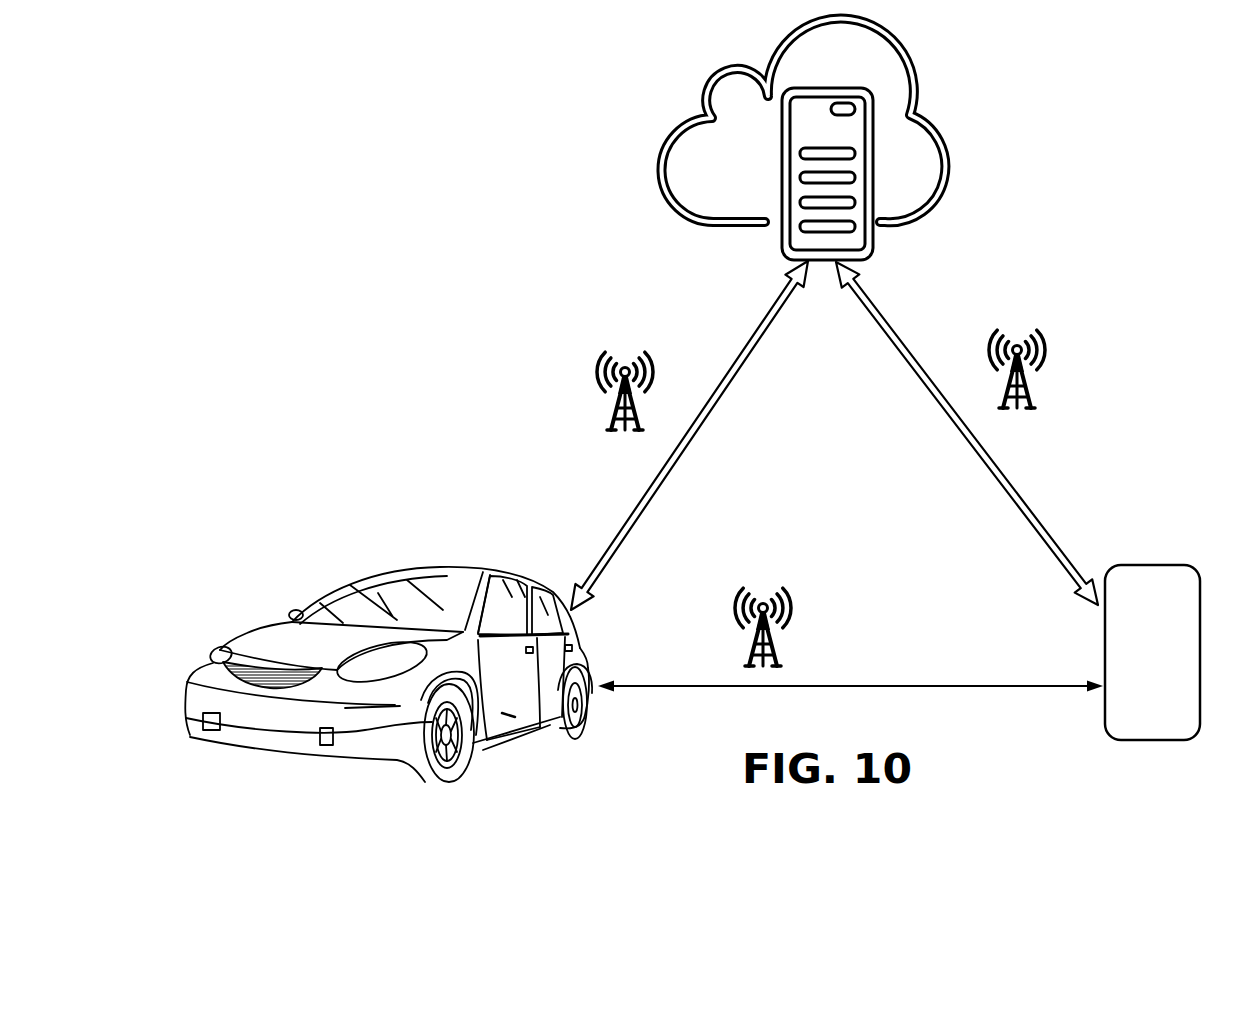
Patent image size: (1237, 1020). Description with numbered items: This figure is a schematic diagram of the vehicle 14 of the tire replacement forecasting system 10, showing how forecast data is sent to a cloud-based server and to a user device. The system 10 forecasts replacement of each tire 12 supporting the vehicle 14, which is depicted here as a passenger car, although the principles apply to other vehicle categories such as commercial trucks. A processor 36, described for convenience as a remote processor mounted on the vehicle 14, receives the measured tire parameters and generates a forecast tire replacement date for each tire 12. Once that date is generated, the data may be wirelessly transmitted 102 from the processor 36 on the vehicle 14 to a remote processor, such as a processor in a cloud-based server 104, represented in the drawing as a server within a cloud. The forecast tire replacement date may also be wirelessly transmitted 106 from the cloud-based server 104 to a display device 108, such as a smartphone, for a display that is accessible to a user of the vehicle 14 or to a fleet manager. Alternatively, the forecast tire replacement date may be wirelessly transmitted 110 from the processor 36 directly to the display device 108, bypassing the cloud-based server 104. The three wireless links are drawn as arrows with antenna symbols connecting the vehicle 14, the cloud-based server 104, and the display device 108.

The tire replacement forecasting system 10 is at (1155, 140).
The tire 12 is at (480, 766).
The vehicle 14 is at (605, 643).
The processor 36 is at (519, 720).
The wireless transmission 102 is at (641, 499).
The cloud-based server 104 is at (739, 234).
The wireless transmission 106 is at (1024, 463).
The display device 108 is at (1173, 662).
The wireless transmission 110 is at (825, 685).